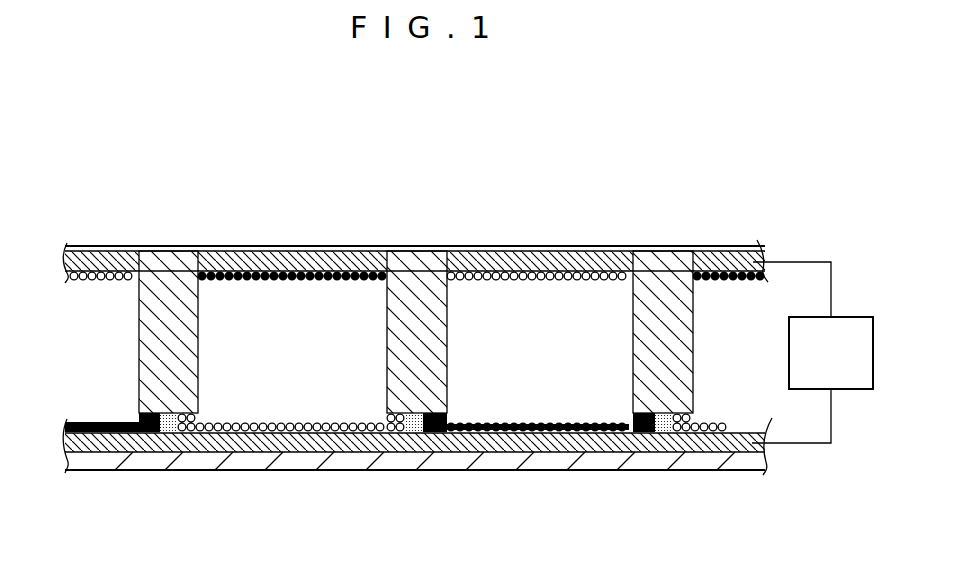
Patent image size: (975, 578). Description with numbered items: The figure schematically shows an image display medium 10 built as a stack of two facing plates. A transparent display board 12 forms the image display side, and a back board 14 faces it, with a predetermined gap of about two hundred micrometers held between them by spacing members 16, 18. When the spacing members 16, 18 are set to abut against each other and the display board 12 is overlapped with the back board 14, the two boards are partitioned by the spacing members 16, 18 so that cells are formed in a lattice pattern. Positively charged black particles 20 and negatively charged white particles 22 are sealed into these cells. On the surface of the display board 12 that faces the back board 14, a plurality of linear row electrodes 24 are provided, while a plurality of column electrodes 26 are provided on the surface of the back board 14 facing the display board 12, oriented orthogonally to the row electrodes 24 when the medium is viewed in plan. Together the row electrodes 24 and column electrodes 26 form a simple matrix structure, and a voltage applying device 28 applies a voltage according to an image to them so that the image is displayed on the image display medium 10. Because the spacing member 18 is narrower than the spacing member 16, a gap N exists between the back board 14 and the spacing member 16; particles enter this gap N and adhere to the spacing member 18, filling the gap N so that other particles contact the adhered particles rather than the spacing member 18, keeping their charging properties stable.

The image display medium 10 is at (734, 156).
The display board 12 is at (155, 250).
The back board 14 is at (247, 463).
The spacing member 16 is at (150, 348).
The spacing member 18 is at (167, 454).
The black particles 20 is at (714, 270).
The white particles 22 is at (706, 434).
The row electrodes 24 is at (546, 255).
The column electrodes 26 is at (331, 456).
The voltage applying device 28 is at (862, 352).
The gap N is at (139, 418).